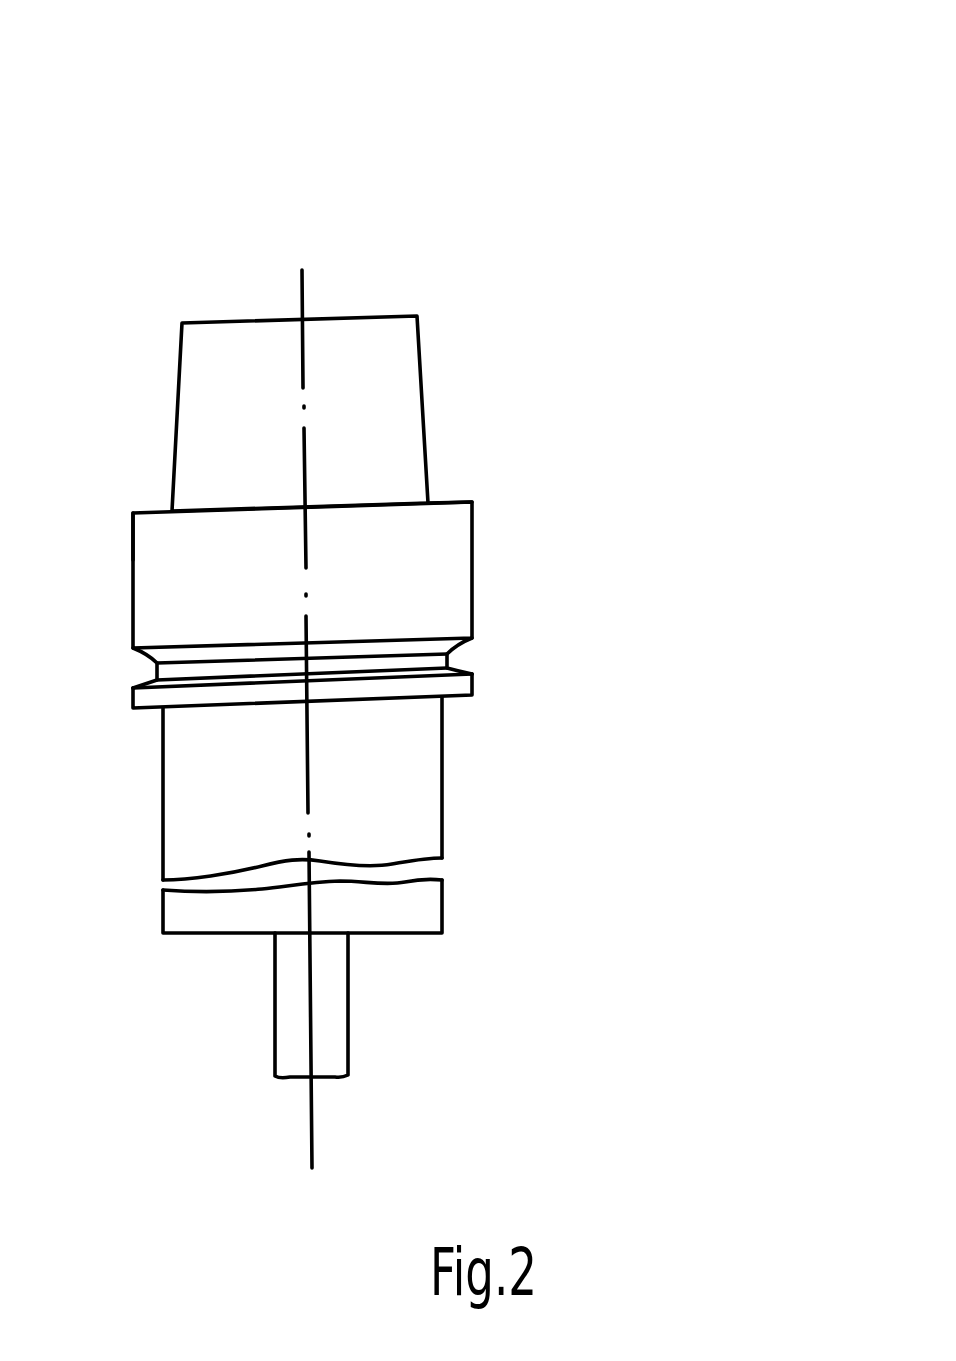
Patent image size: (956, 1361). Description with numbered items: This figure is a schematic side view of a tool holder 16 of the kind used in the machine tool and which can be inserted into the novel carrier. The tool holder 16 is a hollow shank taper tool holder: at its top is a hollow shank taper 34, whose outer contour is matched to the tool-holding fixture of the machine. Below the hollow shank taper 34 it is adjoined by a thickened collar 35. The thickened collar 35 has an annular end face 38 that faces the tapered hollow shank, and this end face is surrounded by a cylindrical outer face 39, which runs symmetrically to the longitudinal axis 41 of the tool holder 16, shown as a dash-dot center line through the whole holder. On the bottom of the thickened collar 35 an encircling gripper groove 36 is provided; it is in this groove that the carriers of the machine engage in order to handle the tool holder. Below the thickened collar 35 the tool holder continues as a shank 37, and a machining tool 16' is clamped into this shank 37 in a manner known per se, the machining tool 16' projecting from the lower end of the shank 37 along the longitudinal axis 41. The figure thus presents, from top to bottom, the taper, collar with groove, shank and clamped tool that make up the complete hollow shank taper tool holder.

The tool holder 16 is at (321, 585).
The machining tool 16' is at (366, 1005).
The hollow shank taper 34 is at (393, 417).
The thickened collar 35 is at (440, 572).
The gripper groove 36 is at (460, 665).
The shank 37 is at (410, 802).
The annular end face 38 is at (444, 489).
The cylindrical outer face 39 is at (110, 525).
The longitudinal axis 41 is at (303, 290).